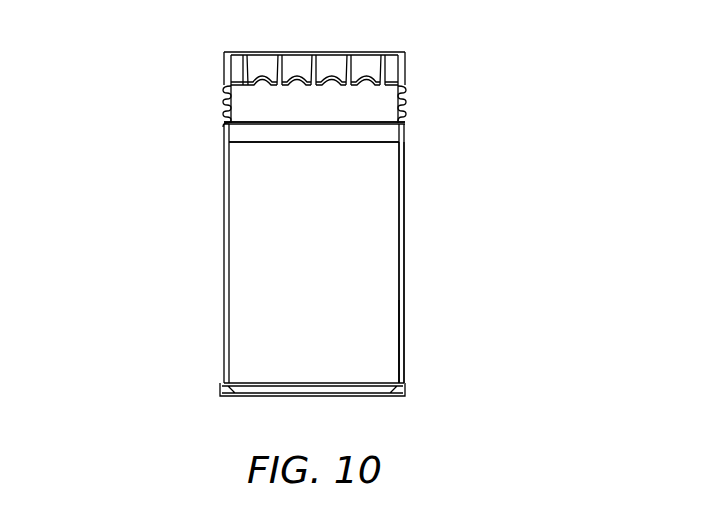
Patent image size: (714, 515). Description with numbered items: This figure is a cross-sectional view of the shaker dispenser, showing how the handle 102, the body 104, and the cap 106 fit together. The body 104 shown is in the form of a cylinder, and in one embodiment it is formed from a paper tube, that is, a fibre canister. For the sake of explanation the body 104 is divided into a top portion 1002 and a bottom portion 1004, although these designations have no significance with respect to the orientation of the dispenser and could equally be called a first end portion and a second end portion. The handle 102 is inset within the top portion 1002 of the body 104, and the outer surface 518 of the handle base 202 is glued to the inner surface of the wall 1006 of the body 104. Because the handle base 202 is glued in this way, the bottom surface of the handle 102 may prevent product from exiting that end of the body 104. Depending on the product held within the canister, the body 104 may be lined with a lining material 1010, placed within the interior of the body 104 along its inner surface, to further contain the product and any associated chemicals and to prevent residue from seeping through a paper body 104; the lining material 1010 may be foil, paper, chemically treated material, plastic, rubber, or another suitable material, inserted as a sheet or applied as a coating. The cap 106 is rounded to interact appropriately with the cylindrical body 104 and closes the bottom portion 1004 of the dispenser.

The handle 102 is at (365, 60).
The top portion 1002 is at (420, 52).
The handle base 202 is at (237, 132).
The outer surface 518 is at (314, 132).
The wall 1006 is at (402, 222).
The body 104 is at (404, 308).
The lining material 1010 is at (399, 358).
The cap 106 is at (393, 396).
The bottom portion 1004 is at (485, 125).